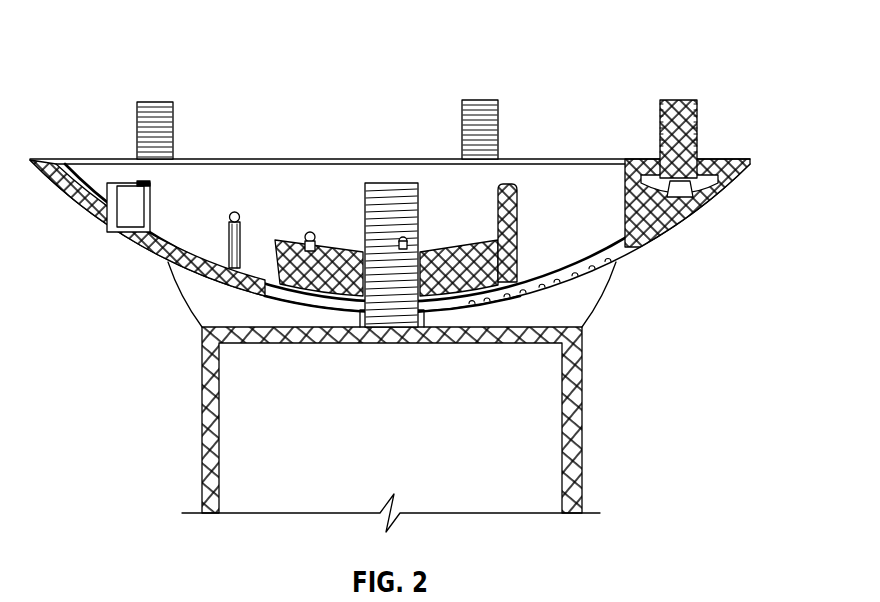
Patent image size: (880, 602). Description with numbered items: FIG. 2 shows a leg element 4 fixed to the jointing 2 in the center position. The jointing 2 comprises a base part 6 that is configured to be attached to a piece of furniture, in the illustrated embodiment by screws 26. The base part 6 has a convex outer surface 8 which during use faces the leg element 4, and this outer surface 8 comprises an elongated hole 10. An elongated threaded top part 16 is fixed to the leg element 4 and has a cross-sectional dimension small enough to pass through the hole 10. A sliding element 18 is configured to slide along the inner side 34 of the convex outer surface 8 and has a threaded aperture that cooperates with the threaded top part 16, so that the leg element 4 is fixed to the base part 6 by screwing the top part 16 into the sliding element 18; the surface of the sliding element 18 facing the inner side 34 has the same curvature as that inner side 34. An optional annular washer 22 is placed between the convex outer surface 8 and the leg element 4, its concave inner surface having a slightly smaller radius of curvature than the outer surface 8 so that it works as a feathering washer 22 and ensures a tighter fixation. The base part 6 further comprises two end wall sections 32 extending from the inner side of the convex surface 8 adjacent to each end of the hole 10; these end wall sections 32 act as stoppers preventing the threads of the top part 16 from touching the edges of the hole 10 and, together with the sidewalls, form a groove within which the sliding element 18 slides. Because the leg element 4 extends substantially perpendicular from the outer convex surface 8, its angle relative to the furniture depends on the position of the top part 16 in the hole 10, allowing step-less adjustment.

The jointing 2 is at (92, 34).
The leg element 4 is at (245, 430).
The base part 6 is at (660, 258).
The convex outer surface 8 is at (85, 210).
The elongated hole 10 is at (196, 325).
The elongated threaded top part 16 is at (392, 207).
The sliding element 18 is at (472, 253).
The annular washer 22 is at (180, 278).
The screws 26 is at (143, 100).
The end wall sections 32 is at (153, 195).
The inner side 34 is at (200, 257).